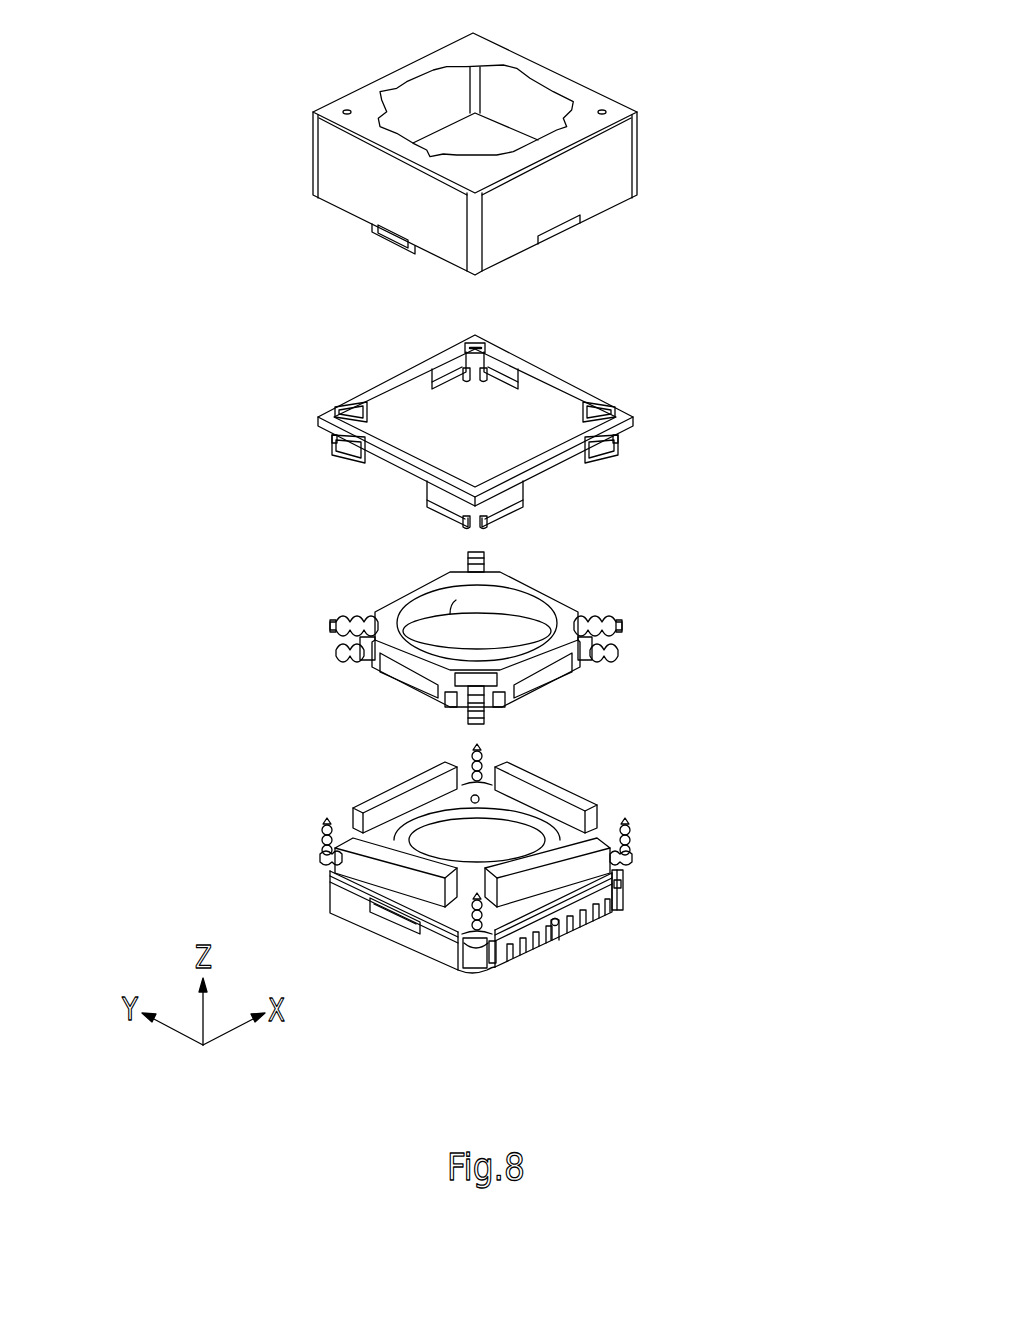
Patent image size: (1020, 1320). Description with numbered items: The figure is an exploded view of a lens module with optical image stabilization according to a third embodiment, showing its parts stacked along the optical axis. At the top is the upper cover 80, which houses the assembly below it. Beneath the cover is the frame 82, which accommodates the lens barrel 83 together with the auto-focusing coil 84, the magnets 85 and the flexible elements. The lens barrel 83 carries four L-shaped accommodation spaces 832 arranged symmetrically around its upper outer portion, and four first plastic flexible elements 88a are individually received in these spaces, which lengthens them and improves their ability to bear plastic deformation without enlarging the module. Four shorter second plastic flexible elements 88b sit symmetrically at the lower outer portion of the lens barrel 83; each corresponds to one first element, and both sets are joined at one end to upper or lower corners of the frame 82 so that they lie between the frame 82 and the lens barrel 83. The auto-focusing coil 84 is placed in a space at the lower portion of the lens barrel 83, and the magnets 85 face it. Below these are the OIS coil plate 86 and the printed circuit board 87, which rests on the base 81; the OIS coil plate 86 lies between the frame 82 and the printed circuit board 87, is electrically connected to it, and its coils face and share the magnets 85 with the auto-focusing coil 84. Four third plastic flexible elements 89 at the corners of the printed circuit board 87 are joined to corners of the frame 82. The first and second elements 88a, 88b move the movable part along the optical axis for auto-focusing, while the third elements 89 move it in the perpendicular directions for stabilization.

The upper cover 80 is at (612, 157).
The base 81 is at (440, 950).
The frame 82 is at (565, 387).
The lens barrel 83 is at (535, 592).
The auto-focusing coil 84 is at (525, 690).
The magnets 85 is at (560, 793).
The OIS coil plate 86 is at (623, 895).
The printed circuit board 87 is at (622, 862).
The first plastic flexible elements 88a is at (597, 615).
The second plastic flexible elements 88b is at (602, 662).
The third plastic flexible elements 89 is at (629, 832).
The L-shaped accommodation space 832 is at (594, 640).